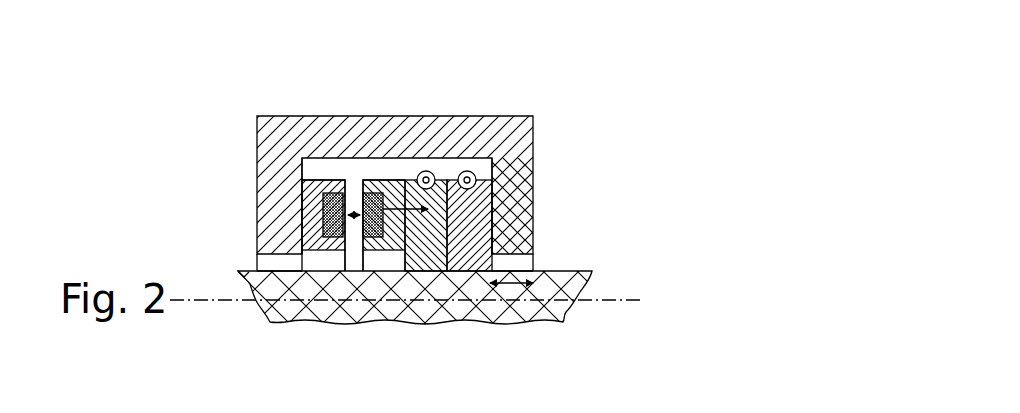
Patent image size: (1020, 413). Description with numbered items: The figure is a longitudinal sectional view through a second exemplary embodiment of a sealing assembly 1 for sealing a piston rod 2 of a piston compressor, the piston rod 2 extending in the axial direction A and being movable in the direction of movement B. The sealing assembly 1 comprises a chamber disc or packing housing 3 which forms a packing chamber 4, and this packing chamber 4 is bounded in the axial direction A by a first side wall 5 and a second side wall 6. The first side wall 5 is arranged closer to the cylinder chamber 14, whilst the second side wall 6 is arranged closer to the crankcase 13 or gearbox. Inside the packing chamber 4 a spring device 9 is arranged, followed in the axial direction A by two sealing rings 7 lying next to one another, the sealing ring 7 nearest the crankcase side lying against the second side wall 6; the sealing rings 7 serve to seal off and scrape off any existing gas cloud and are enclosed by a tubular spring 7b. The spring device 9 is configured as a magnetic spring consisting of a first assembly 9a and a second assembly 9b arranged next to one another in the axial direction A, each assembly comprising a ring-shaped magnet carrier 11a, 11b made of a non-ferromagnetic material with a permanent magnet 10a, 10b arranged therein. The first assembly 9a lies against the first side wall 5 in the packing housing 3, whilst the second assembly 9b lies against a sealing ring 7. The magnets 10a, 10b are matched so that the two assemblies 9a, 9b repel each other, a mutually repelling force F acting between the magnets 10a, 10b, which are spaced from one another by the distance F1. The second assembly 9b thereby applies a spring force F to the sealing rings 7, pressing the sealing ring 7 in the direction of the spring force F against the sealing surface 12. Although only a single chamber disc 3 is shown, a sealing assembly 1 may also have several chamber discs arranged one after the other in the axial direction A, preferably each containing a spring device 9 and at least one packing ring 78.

The sealing assembly 1 is at (549, 99).
The piston rod 2 is at (251, 278).
The packing housing 3 is at (266, 116).
The packing chamber 4 is at (391, 178).
The first side wall 5 is at (301, 213).
The second side wall 6 is at (493, 236).
The sealing ring 7 is at (440, 210).
The tubular spring 7b is at (426, 171).
The spring device 9 is at (378, 42).
The first assembly 9a is at (281, 210).
The second assembly 9b is at (412, 210).
The permanent magnet 10a is at (330, 240).
The permanent magnet 10b is at (372, 240).
The ring-shaped magnet carrier 11a is at (312, 255).
The ring-shaped magnet carrier 11b is at (396, 255).
The sealing surface 12 is at (500, 194).
The crankcase 13 is at (648, 250).
The cylinder chamber 14 is at (196, 250).
The packing ring 78 is at (482, 202).
The axial direction A is at (627, 300).
The direction of movement B is at (535, 298).
The spring force F is at (452, 258).
The distance F1 is at (353, 238).